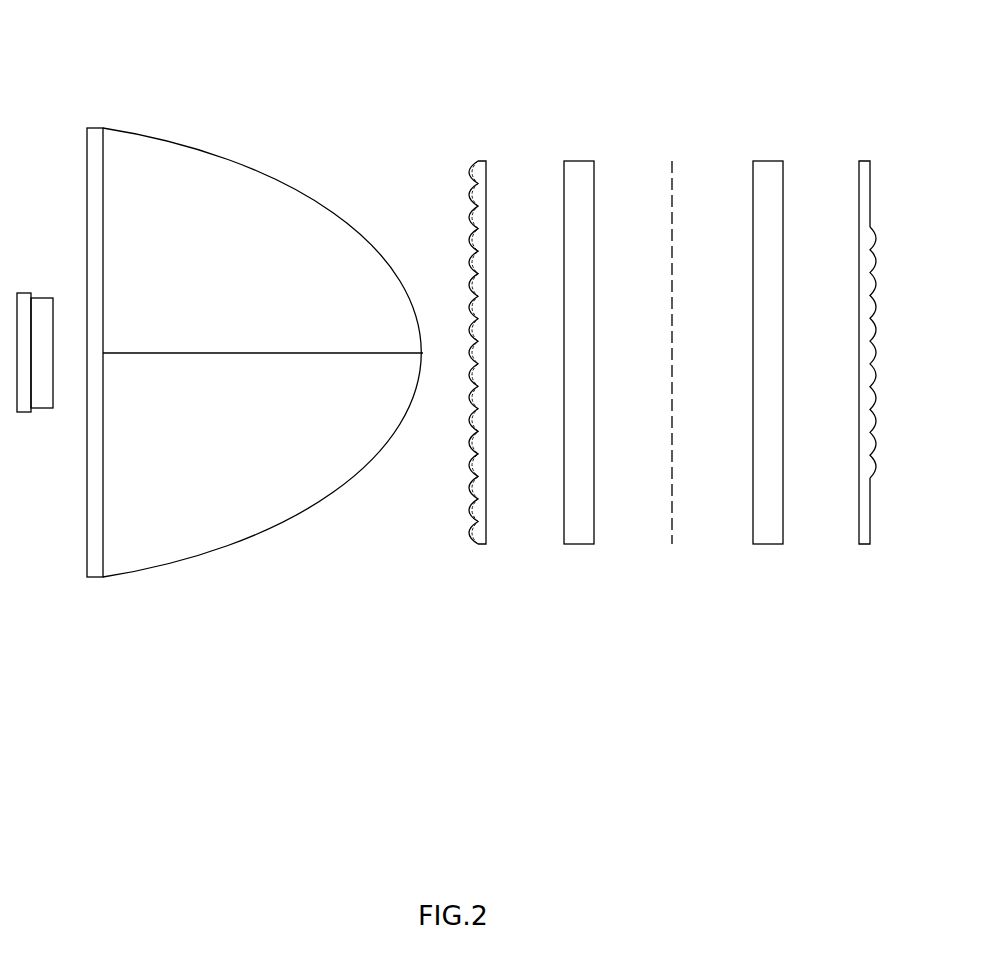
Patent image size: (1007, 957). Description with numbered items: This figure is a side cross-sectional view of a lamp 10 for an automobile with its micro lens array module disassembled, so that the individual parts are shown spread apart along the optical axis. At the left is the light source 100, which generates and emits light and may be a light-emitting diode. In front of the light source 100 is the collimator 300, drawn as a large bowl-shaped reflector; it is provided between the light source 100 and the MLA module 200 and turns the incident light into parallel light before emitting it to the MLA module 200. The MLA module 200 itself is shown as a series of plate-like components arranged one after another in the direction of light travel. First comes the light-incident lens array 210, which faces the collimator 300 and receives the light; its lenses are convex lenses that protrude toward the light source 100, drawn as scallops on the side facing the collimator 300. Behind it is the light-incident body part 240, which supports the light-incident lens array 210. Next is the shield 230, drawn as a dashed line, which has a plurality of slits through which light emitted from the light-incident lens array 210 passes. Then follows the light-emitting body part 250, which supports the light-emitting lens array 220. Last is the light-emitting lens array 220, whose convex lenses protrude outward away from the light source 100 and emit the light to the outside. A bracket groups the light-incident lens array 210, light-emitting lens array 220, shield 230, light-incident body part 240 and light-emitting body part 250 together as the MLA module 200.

The lamp for an automobile 10 is at (98, 20).
The light source 100 is at (22, 292).
The collimator 300 is at (172, 160).
The micro lens array (MLA) module 200 is at (820, 616).
The light-incident lens array 210 is at (481, 160).
The light-emitting lens array 220 is at (864, 160).
The shield 230 is at (672, 160).
The light-incident body part 240 is at (578, 160).
The light-emitting body part 250 is at (767, 160).